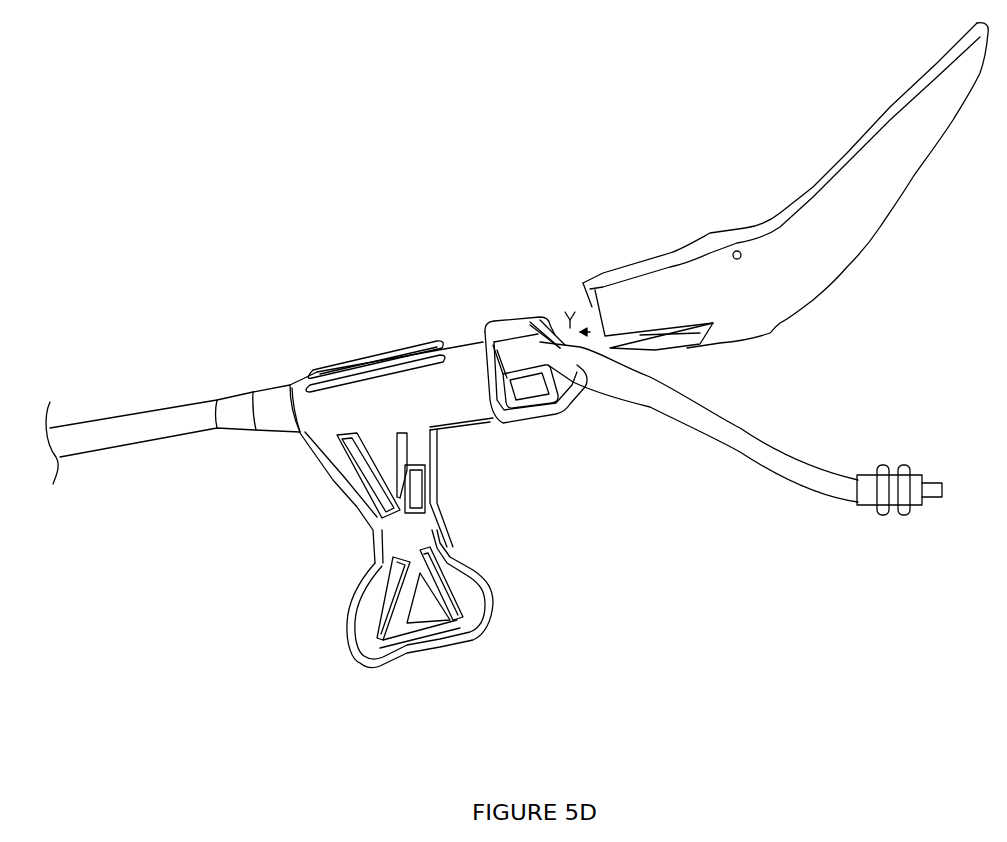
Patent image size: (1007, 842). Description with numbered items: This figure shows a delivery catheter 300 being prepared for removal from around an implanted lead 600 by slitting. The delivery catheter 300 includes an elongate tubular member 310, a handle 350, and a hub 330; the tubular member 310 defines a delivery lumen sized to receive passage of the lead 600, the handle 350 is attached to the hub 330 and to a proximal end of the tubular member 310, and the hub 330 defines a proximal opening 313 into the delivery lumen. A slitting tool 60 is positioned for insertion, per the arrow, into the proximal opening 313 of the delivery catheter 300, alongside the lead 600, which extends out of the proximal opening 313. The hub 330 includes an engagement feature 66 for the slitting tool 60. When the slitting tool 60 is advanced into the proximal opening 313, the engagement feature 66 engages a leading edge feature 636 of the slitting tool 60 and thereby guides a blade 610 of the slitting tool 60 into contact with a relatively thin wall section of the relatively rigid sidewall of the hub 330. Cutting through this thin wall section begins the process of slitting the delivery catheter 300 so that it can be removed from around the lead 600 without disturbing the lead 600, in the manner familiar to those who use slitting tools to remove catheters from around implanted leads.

The delivery catheter 300 is at (180, 260).
The elongate tubular member 310 is at (96, 436).
The hub 330 is at (360, 343).
The handle 350 is at (357, 533).
The engagement feature 66 is at (496, 307).
The proximal opening 313 is at (561, 330).
The leading edge feature 636 is at (572, 312).
The slitting tool 60 is at (751, 168).
The blade 610 is at (650, 340).
The lead 600 is at (770, 441).